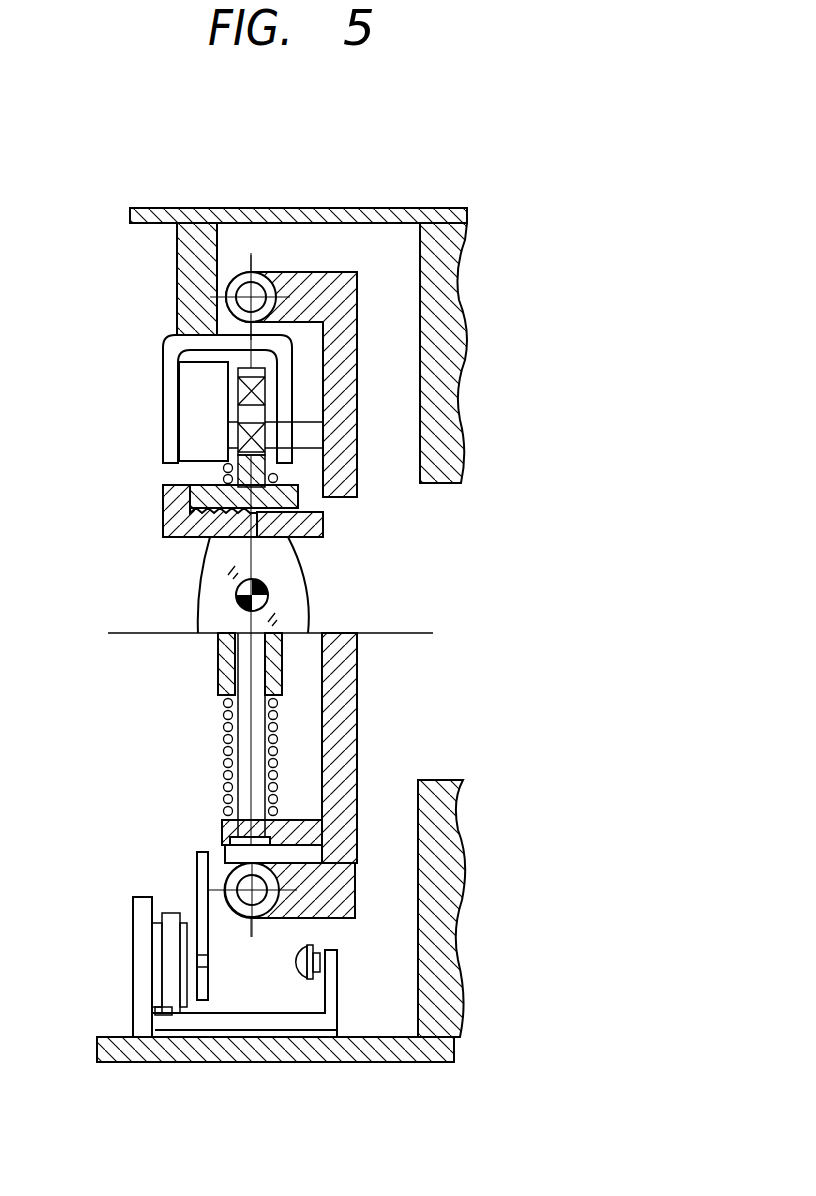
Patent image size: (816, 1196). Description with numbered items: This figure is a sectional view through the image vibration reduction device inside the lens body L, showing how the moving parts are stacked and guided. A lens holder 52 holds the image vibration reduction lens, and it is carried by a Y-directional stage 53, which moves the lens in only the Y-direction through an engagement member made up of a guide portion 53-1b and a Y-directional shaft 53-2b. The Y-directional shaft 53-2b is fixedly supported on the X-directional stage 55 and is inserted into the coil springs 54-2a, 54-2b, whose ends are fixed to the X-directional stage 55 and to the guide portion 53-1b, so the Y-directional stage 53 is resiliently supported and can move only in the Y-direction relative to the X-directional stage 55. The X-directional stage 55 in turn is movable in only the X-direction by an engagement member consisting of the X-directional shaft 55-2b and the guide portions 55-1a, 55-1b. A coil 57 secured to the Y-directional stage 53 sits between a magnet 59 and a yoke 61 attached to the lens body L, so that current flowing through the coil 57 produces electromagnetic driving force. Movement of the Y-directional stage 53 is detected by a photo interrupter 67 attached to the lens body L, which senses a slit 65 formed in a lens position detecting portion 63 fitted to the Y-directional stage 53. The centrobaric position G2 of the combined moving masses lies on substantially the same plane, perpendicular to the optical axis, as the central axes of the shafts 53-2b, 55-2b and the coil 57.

The lens body L is at (438, 210).
The X-directional stage 55 is at (343, 415).
The guide portion 55-1b is at (236, 274).
The guide portion 55-1a is at (210, 889).
The X-directional shaft 55-2b is at (259, 282).
The coil 57 is at (238, 393).
The magnet 59 is at (205, 415).
The yoke 61 is at (172, 447).
The lens holder 52 is at (170, 507).
The Y-directional stage 53 is at (298, 498).
The coil spring 54-2a is at (278, 475).
The centrobaric position G2 is at (238, 604).
The guide portion 53-1b is at (297, 682).
The Y-directional shaft 53-2b is at (262, 777).
The coil spring 54-2b is at (280, 740).
The lens position detecting portion 63 is at (197, 854).
The slit 65 is at (205, 963).
The photo interrupter 67 is at (172, 1007).